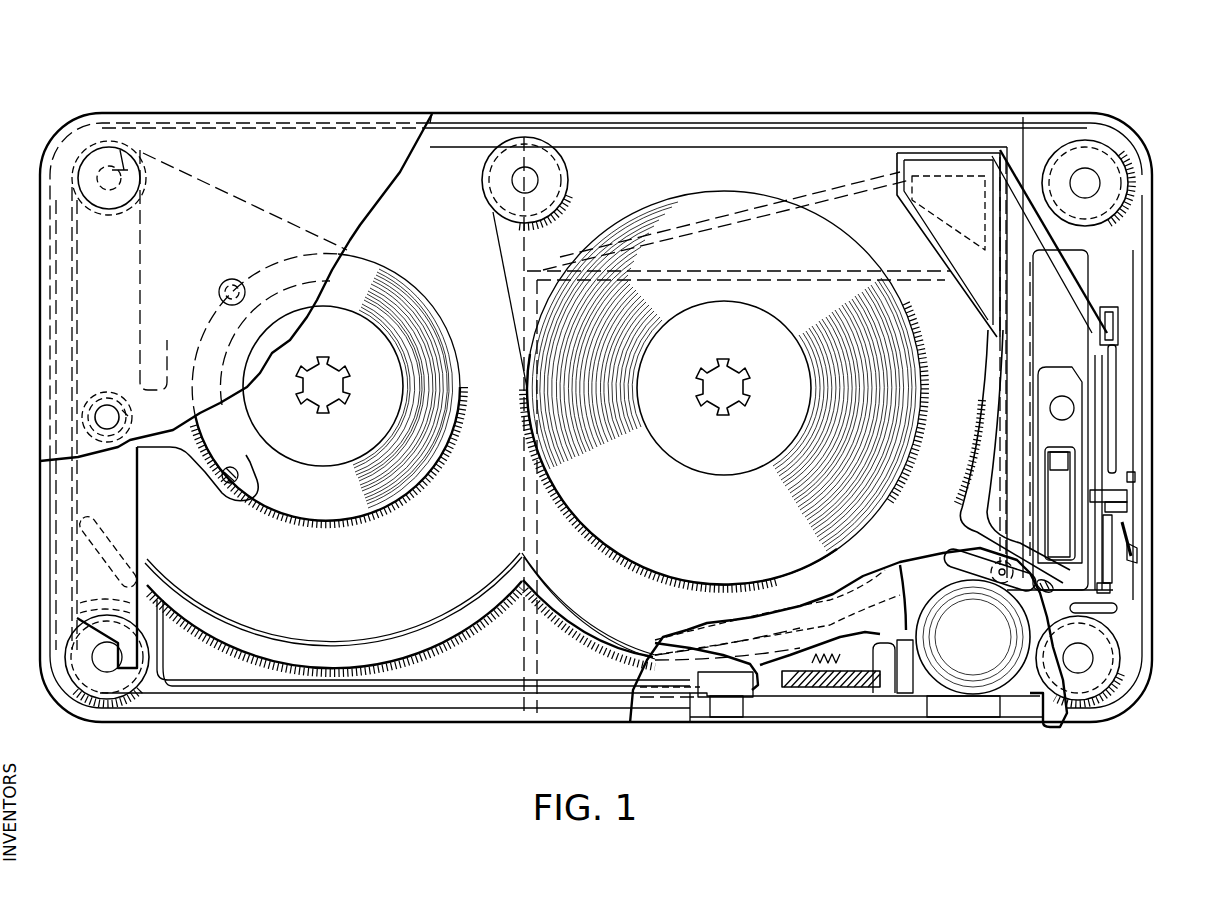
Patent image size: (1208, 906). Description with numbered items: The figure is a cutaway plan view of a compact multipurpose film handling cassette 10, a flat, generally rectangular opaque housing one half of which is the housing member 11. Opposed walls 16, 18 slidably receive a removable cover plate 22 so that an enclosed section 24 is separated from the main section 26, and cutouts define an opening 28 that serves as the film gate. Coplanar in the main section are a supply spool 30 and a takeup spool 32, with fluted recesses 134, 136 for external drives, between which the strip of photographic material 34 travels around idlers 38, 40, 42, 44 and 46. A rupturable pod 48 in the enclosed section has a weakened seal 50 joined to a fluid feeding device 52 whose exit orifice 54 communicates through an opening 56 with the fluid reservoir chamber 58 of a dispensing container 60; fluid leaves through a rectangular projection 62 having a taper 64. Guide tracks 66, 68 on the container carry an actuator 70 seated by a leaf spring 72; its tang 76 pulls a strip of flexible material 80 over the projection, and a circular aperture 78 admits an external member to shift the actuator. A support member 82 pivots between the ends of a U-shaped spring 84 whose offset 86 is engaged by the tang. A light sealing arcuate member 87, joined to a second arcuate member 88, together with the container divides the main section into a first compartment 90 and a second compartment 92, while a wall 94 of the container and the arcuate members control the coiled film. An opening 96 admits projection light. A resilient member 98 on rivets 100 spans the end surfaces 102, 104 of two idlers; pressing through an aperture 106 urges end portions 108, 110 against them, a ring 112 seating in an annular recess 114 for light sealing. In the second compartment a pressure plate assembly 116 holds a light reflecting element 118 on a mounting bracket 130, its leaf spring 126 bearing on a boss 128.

The film handling cassette 10 is at (1097, 730).
The housing member 11 is at (272, 113).
The opposed wall 16 is at (518, 668).
The opposed wall 18 is at (1047, 170).
The removable cover plate 22 is at (988, 722).
The enclosed section 24 is at (518, 640).
The main section 26 is at (432, 113).
The opening 28 is at (702, 718).
The supply spool 30 is at (795, 356).
The takeup spool 32 is at (440, 317).
The strip of photographic material 34 is at (660, 148).
The idler 38 is at (506, 147).
The idler 40 is at (1085, 140).
The idler 42 is at (1112, 630).
The idler 44 is at (65, 652).
The idler 46 is at (45, 180).
The rupturable pod 48 is at (563, 672).
The weakened seal 50 is at (648, 275).
The fluid feeding device 52 is at (836, 193).
The exit orifice 54 is at (935, 150).
The opening 56 is at (960, 172).
The fluid reservoir chamber 58 is at (1010, 275).
The dispensing container 60 is at (1017, 260).
The rectangular projection 62 is at (1137, 560).
The taper 64 is at (1133, 517).
The guide track 66 is at (1035, 307).
The guide track 68 is at (1118, 335).
The actuator 70 is at (1083, 397).
The leaf spring 72 is at (1067, 480).
The tang 76 is at (1135, 477).
The circular aperture 78 is at (1066, 396).
The strip of flexible material 80 is at (1117, 605).
The support member 82 is at (1133, 530).
The U-shaped spring 84 is at (1117, 423).
The offset 86 is at (1127, 495).
The light sealing arcuate member 87 is at (646, 653).
The second light sealing arcuate member 88 is at (383, 638).
The first compartment 90 is at (600, 603).
The second compartment 92 is at (413, 675).
The wall 94 is at (986, 350).
The opening 96 is at (948, 557).
The resilient member 98 is at (126, 520).
The rivet 100 is at (233, 279).
The end surface 102 is at (113, 693).
The end surface 104 is at (107, 145).
The aperture 106 is at (101, 403).
The end portion 108 is at (140, 690).
The end portion 110 is at (143, 150).
The ring 112 is at (116, 378).
The annular recess 114 is at (130, 413).
The pressure plate assembly 116 is at (885, 695).
The light reflecting element 118 is at (980, 667).
The leaf spring 126 is at (865, 688).
The boss 128 is at (800, 600).
The mounting bracket 130 is at (910, 570).
The fluted recess 134 is at (735, 372).
The fluted recess 136 is at (322, 368).